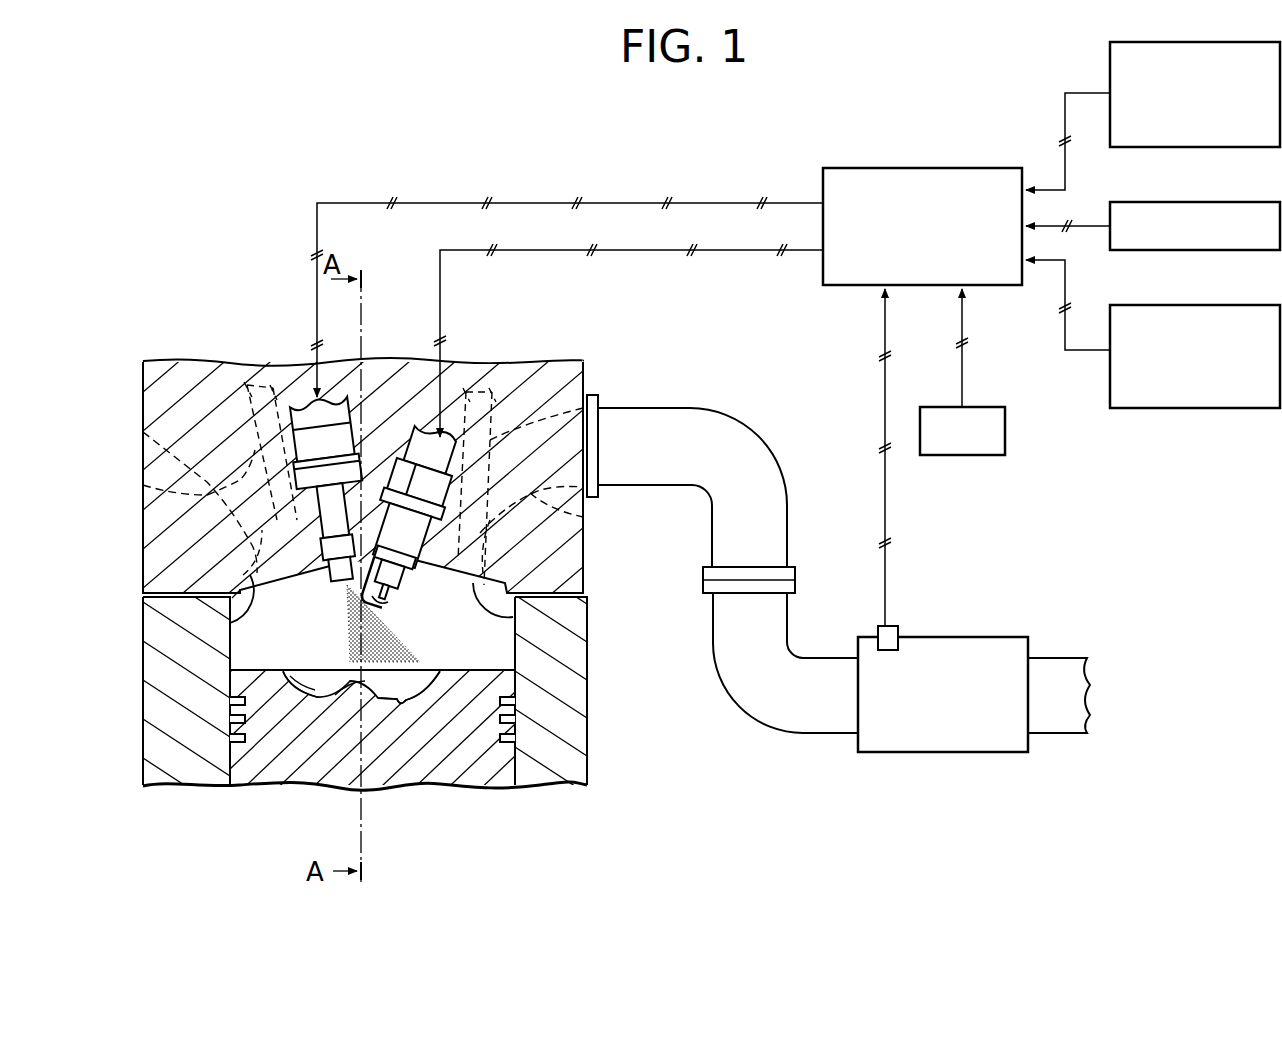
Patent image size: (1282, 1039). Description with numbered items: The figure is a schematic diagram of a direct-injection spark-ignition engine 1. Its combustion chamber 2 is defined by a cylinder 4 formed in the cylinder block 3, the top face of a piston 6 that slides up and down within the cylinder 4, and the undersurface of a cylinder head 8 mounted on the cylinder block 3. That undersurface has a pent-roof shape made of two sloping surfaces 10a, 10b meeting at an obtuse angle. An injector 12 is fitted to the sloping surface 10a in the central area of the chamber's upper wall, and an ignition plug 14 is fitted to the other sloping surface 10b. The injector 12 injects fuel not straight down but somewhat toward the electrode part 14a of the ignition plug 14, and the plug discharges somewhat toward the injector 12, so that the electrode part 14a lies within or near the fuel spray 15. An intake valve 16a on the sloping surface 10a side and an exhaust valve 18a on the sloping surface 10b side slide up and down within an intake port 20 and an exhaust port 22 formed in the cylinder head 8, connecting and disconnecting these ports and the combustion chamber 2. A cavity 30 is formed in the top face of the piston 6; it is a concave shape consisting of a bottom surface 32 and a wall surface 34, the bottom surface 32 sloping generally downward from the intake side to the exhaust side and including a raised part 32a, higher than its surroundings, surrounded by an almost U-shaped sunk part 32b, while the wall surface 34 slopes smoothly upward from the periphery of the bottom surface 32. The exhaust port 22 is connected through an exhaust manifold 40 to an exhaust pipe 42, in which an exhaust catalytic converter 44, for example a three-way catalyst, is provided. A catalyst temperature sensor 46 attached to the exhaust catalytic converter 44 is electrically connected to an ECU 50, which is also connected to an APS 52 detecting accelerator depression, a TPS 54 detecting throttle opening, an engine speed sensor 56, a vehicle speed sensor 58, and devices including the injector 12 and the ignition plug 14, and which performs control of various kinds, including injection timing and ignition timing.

The engine 1 is at (563, 813).
The combustion chamber 2 is at (471, 656).
The cylinder block 3 is at (591, 686).
The cylinder 4 is at (518, 636).
The piston 6 is at (490, 748).
The cylinder head 8 is at (593, 557).
The sloping surface 10a is at (232, 620).
The sloping surface 10b is at (513, 614).
The injector 12 is at (302, 385).
The ignition plug 14 is at (424, 382).
The electrode part 14a is at (392, 596).
The fuel spray 15 is at (348, 636).
The intake valve 16a is at (256, 380).
The exhaust valve 18a is at (494, 392).
The intake port 20 is at (143, 486).
The exhaust port 22 is at (592, 518).
The cavity 30 is at (343, 704).
The bottom surface 32 is at (235, 690).
The raised part 32a is at (317, 690).
The sunk part 32b is at (427, 692).
The wall surface 34 is at (442, 686).
The exhaust manifold 40 is at (713, 425).
The exhaust pipe 42 is at (770, 712).
The exhaust catalytic converter 44 is at (982, 740).
The catalyst temperature sensor 46 is at (900, 631).
The ECU 50 is at (860, 168).
The APS 52 is at (981, 457).
The TPS 54 is at (1235, 251).
The engine speed sensor 56 is at (1235, 409).
The vehicle speed sensor 58 is at (1235, 148).